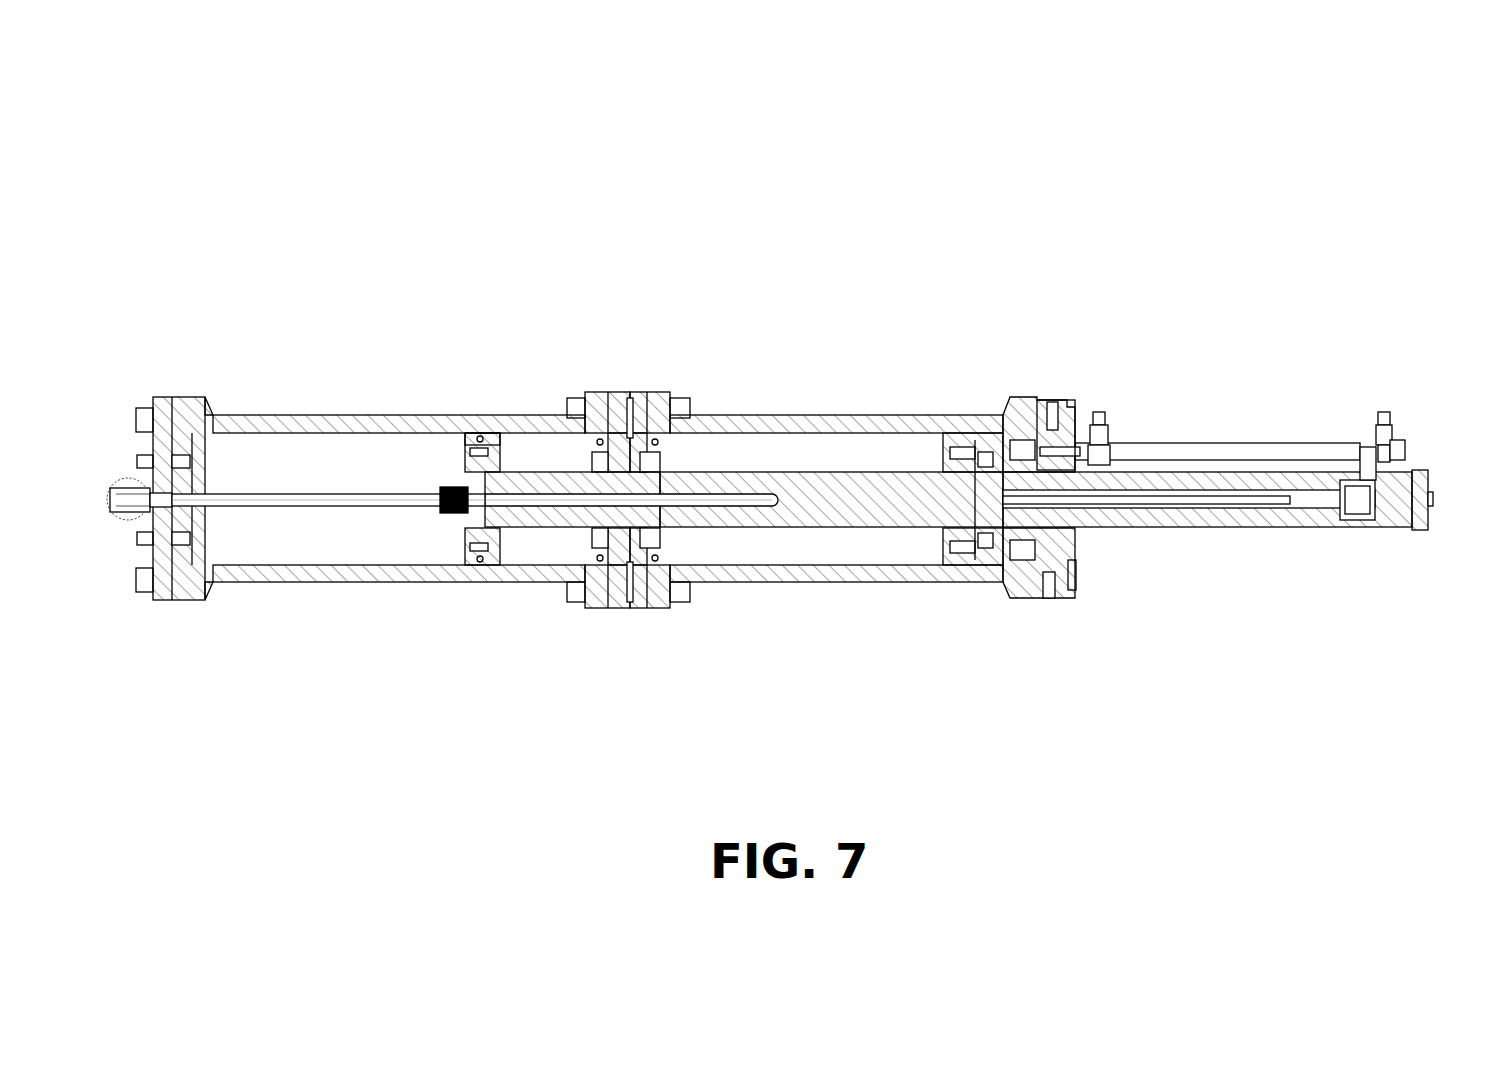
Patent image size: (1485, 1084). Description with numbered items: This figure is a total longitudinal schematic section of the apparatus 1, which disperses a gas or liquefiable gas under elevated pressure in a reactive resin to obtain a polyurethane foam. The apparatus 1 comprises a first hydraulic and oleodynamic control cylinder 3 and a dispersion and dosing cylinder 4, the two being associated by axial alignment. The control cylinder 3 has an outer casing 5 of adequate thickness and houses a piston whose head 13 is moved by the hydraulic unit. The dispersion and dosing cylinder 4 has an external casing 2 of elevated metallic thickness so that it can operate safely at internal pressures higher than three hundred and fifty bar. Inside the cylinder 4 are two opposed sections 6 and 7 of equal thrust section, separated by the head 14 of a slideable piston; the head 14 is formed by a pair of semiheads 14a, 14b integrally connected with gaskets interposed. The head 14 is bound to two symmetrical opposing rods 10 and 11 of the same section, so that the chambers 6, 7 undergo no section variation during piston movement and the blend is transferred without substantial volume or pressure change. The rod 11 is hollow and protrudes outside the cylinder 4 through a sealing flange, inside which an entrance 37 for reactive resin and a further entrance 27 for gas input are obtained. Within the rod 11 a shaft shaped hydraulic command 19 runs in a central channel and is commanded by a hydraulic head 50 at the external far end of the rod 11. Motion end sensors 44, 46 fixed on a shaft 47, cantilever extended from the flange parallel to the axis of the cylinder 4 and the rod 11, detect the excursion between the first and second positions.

The apparatus 1 is at (1067, 245).
The casing 2 is at (774, 415).
The hydraulic and oleodynamic cylinder 3 is at (408, 580).
The dispersion and dosing cylinder 4 is at (866, 413).
The outer casing 5 is at (302, 418).
The section 6 is at (535, 540).
The section 7 is at (808, 540).
The rod 10 is at (551, 472).
The rod 11 is at (1220, 528).
The head 13 is at (470, 430).
The head 14 is at (630, 605).
The semihead 14a is at (607, 567).
The semihead 14b is at (647, 567).
The shaft shaped hydraulic command 19 is at (1247, 525).
The entrance 27 is at (1050, 405).
The entrance 37 is at (1060, 595).
The motion end sensor 44 is at (1095, 422).
The motion end sensor 46 is at (1373, 420).
The shaft 47 is at (1217, 430).
The hydraulic head 50 is at (1378, 527).